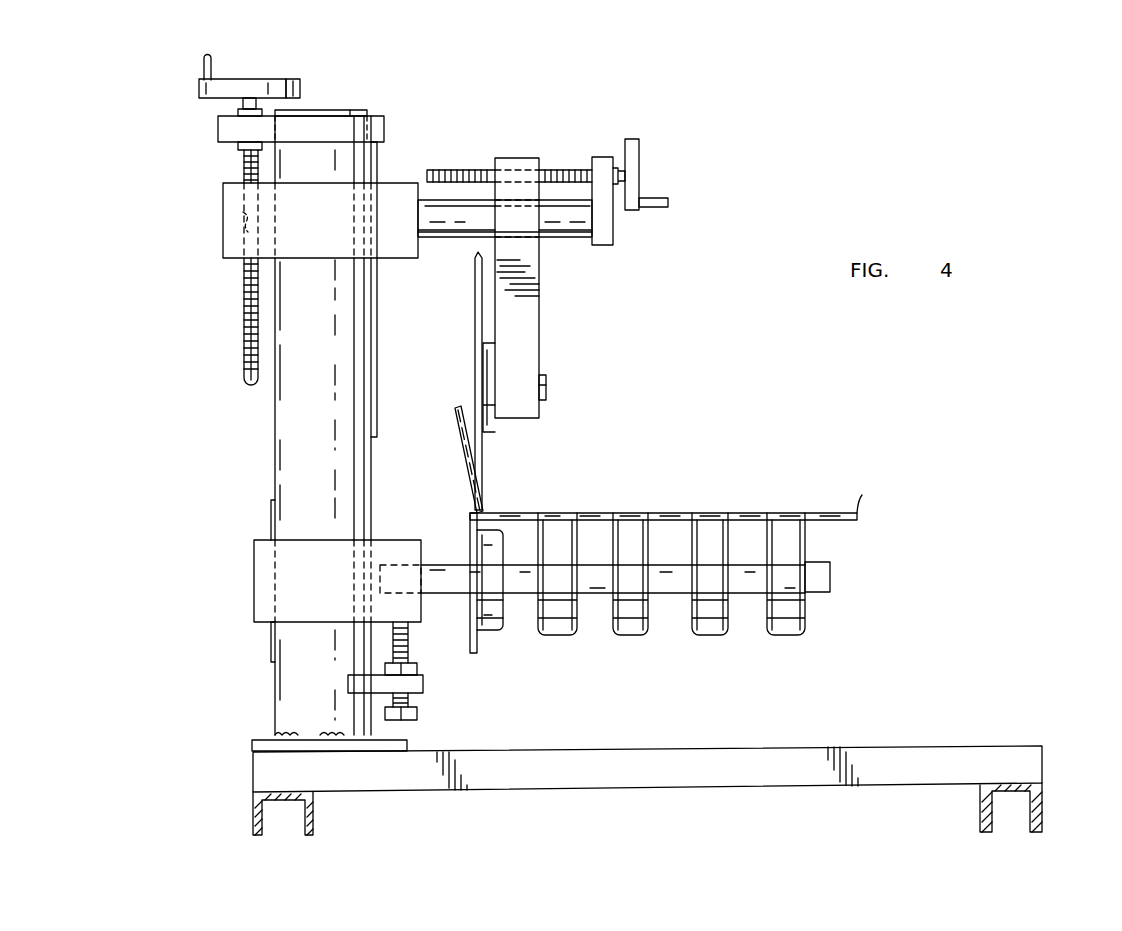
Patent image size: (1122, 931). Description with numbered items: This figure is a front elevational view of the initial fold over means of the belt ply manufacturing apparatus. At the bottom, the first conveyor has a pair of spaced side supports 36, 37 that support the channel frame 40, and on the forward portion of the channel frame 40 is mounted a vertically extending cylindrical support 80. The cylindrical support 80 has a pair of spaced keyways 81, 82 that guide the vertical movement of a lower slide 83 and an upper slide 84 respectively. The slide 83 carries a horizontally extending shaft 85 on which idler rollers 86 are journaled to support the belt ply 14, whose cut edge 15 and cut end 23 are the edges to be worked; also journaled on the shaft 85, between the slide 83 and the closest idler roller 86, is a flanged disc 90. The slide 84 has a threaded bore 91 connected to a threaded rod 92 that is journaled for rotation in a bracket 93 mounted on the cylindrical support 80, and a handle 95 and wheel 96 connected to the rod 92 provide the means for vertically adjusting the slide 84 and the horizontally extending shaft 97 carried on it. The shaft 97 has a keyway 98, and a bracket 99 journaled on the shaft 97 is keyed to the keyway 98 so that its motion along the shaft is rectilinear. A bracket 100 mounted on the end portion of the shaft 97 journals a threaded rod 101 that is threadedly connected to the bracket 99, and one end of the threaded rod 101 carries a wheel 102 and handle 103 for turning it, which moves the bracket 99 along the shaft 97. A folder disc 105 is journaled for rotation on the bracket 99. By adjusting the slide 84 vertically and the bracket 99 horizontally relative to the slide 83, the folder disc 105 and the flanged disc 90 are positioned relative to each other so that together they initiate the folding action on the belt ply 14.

The belt ply 14 is at (706, 504).
The cut edge 15 is at (458, 410).
The cut end 23 is at (857, 513).
The side support 36 is at (256, 824).
The side support 37 is at (1038, 820).
The channel frame 40 is at (665, 778).
The cylindrical support 80 is at (292, 438).
The keyway 81 is at (272, 508).
The keyway 82 is at (377, 336).
The slide 83 is at (262, 588).
The slide 84 is at (232, 243).
The shaft 85 is at (826, 578).
The idler rollers 86 is at (786, 625).
The flanged disc 90 is at (474, 640).
The threaded bore 91 is at (243, 212).
The threaded rod 92 is at (252, 338).
The bracket 93 is at (218, 128).
The handle 95 is at (204, 70).
The wheel 96 is at (300, 88).
The shaft 97 is at (572, 234).
The keyway 98 is at (462, 205).
The bracket 99 is at (528, 320).
The bracket 100 is at (608, 233).
The threaded rod 101 is at (561, 170).
The wheel 102 is at (636, 157).
The handle 103 is at (660, 200).
The folder disc 105 is at (479, 305).